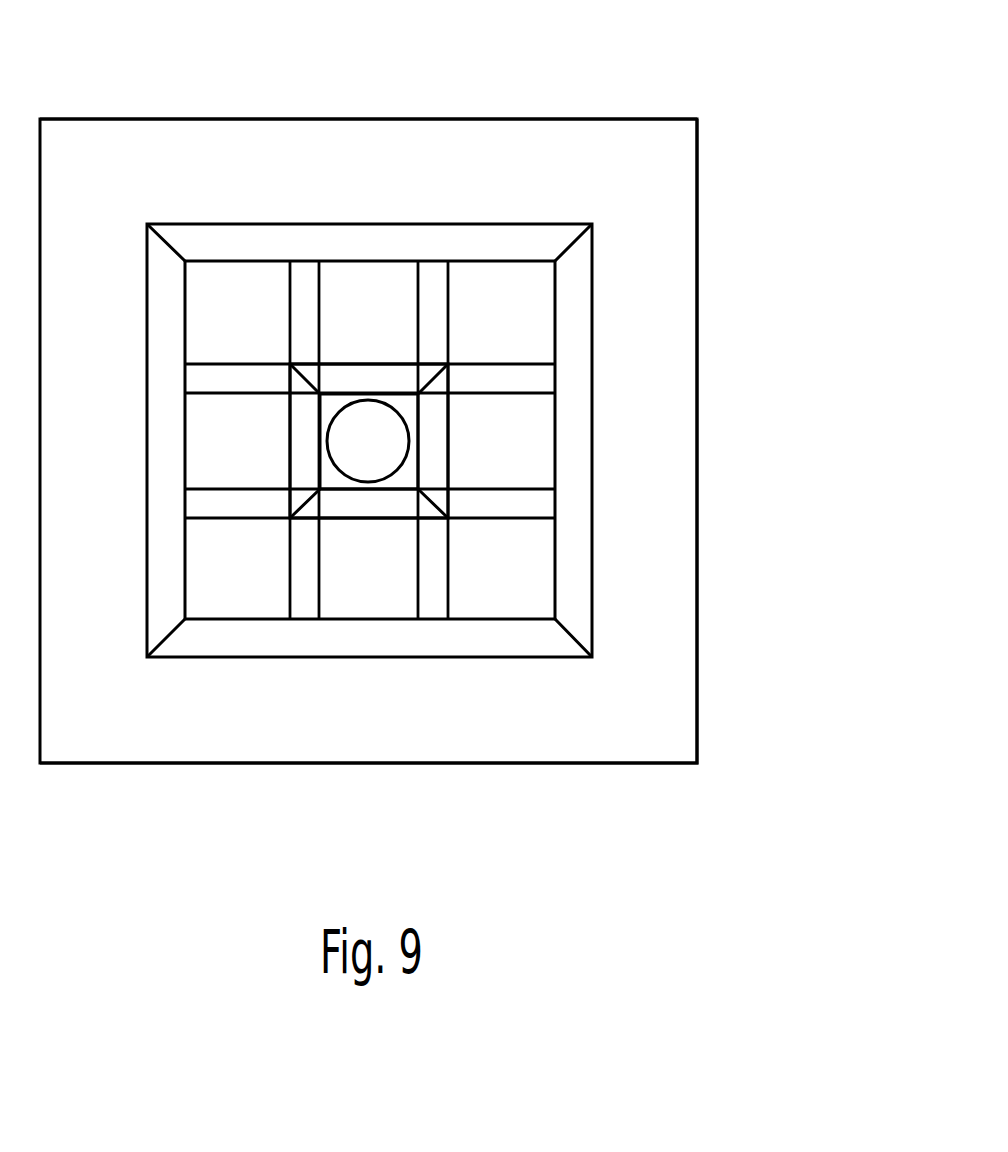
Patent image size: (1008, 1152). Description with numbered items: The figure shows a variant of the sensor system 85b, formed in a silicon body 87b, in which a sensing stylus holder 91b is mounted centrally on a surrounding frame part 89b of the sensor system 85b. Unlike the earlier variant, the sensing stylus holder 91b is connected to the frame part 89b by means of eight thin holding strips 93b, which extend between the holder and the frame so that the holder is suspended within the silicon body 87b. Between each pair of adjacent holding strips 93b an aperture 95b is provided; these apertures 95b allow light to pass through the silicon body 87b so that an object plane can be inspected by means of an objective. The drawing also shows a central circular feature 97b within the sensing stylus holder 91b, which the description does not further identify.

The sensor system 85b is at (699, 331).
The silicon body 87b is at (638, 116).
The frame part 89b is at (653, 743).
The sensing stylus holder 91b is at (448, 442).
The holding strips 93b is at (370, 443).
The aperture 95b is at (527, 587).
The central opening 97b is at (398, 412).